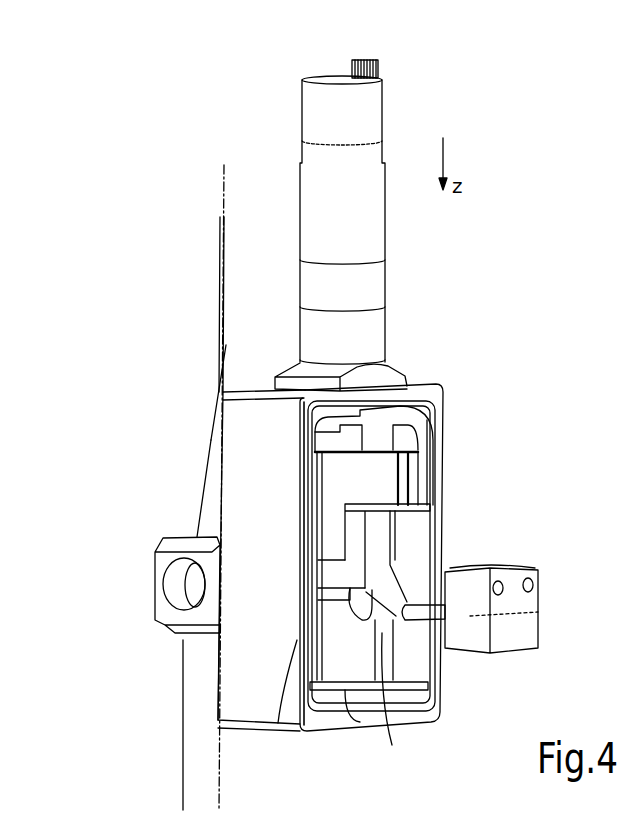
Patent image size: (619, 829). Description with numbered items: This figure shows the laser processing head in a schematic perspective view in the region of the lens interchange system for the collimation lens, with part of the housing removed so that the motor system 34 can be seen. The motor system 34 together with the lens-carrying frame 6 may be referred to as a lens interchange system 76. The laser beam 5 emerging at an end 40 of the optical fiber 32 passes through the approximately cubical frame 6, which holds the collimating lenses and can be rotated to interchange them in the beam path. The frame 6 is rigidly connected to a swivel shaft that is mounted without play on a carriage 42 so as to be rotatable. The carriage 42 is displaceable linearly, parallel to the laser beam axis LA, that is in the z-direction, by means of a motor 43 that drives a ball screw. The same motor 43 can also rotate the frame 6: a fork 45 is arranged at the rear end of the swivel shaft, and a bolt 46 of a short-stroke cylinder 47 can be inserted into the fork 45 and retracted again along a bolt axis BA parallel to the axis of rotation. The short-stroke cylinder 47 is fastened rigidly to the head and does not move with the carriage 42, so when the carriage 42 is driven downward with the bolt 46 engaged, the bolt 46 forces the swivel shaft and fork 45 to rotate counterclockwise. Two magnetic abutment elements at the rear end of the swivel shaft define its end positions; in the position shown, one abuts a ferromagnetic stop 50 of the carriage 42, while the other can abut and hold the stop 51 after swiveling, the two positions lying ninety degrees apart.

The laser beam 5 is at (202, 496).
The frame 6 is at (160, 556).
The optical fiber 32 is at (221, 280).
The motor system 34 is at (430, 733).
The end of the optical fiber 40 is at (222, 353).
The carriage 42 is at (414, 554).
The motor 43 is at (366, 336).
The fork 45 is at (392, 688).
The bolt 46 is at (453, 655).
The short-stroke cylinder 47 is at (520, 638).
The stop 50 is at (397, 527).
The stop 51 is at (350, 722).
The lens interchange system 76 is at (103, 530).
The laser beam axis LA is at (223, 190).
The bolt axis BA is at (463, 617).